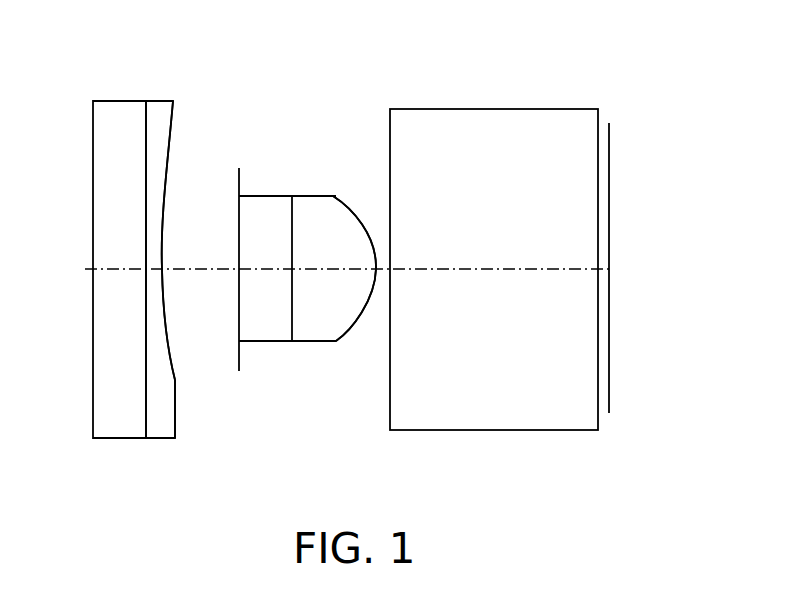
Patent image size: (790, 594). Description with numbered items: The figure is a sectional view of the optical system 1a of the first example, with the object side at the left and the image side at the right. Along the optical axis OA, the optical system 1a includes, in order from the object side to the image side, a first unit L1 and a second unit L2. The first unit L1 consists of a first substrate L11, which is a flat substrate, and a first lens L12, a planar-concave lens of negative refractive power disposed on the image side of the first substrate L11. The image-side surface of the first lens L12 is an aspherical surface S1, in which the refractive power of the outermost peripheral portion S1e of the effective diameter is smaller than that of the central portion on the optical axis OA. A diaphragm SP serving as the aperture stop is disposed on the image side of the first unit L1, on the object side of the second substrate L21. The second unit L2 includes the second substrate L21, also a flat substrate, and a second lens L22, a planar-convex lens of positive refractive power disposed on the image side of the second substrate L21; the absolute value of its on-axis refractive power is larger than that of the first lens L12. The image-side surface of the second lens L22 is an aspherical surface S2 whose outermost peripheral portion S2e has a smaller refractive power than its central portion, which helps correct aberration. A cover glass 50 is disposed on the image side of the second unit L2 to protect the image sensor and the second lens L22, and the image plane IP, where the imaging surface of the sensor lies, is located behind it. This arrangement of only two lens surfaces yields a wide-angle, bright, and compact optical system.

The optical system 1a is at (691, 51).
The optical axis OA is at (85, 269).
The first unit L1 is at (169, 265).
The first substrate L11 is at (122, 118).
The first lens L12 is at (158, 115).
The aspherical surface S1 is at (168, 208).
The outermost peripheral portion S1e is at (215, 432).
The diaphragm SP is at (239, 168).
The second unit L2 is at (303, 253).
The second substrate L21 is at (262, 213).
The second lens L22 is at (310, 225).
The aspherical surface S2 is at (363, 227).
The outermost peripheral portion S2e is at (356, 296).
The cover glass 50 is at (475, 418).
The image plane IP is at (609, 183).